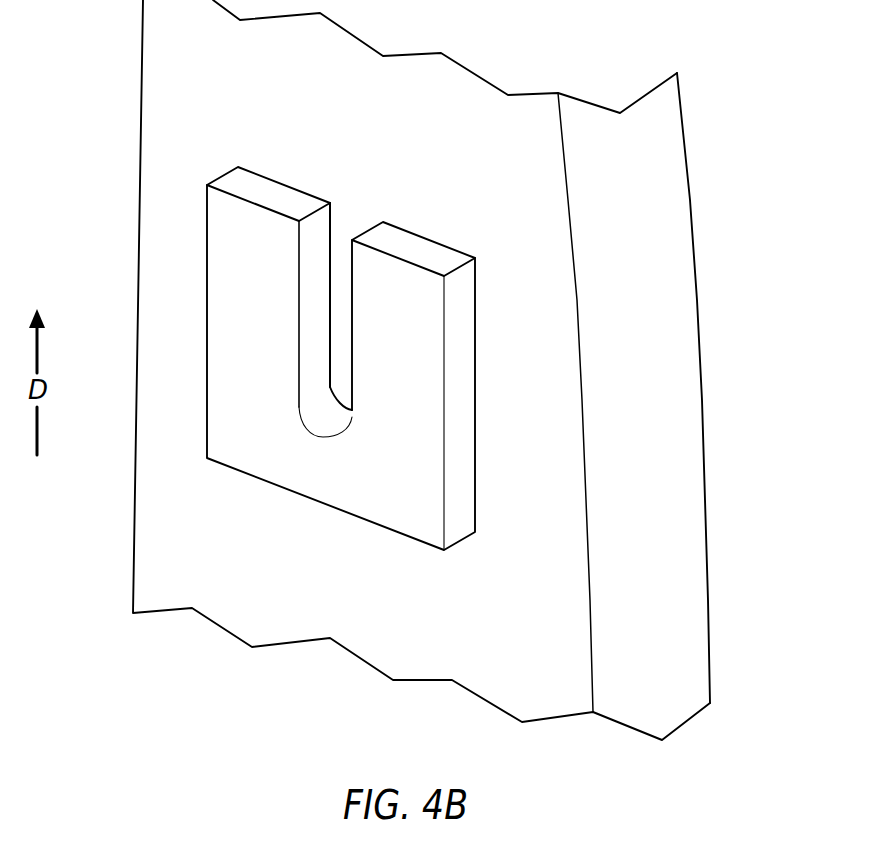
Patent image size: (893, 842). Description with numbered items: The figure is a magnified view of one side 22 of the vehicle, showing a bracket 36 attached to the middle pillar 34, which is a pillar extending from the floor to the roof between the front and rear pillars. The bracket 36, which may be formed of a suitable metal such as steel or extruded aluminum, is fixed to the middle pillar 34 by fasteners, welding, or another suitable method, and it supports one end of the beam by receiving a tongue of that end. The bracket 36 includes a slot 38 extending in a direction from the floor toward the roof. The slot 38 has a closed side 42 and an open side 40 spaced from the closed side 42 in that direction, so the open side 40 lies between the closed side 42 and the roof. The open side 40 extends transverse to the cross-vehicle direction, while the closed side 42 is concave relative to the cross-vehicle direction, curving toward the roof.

The side 22 is at (736, 203).
The middle pillar 34 is at (698, 323).
The bracket 36 is at (303, 348).
The slot 38 is at (216, 377).
The open side 40 is at (363, 237).
The closed side 42 is at (285, 479).